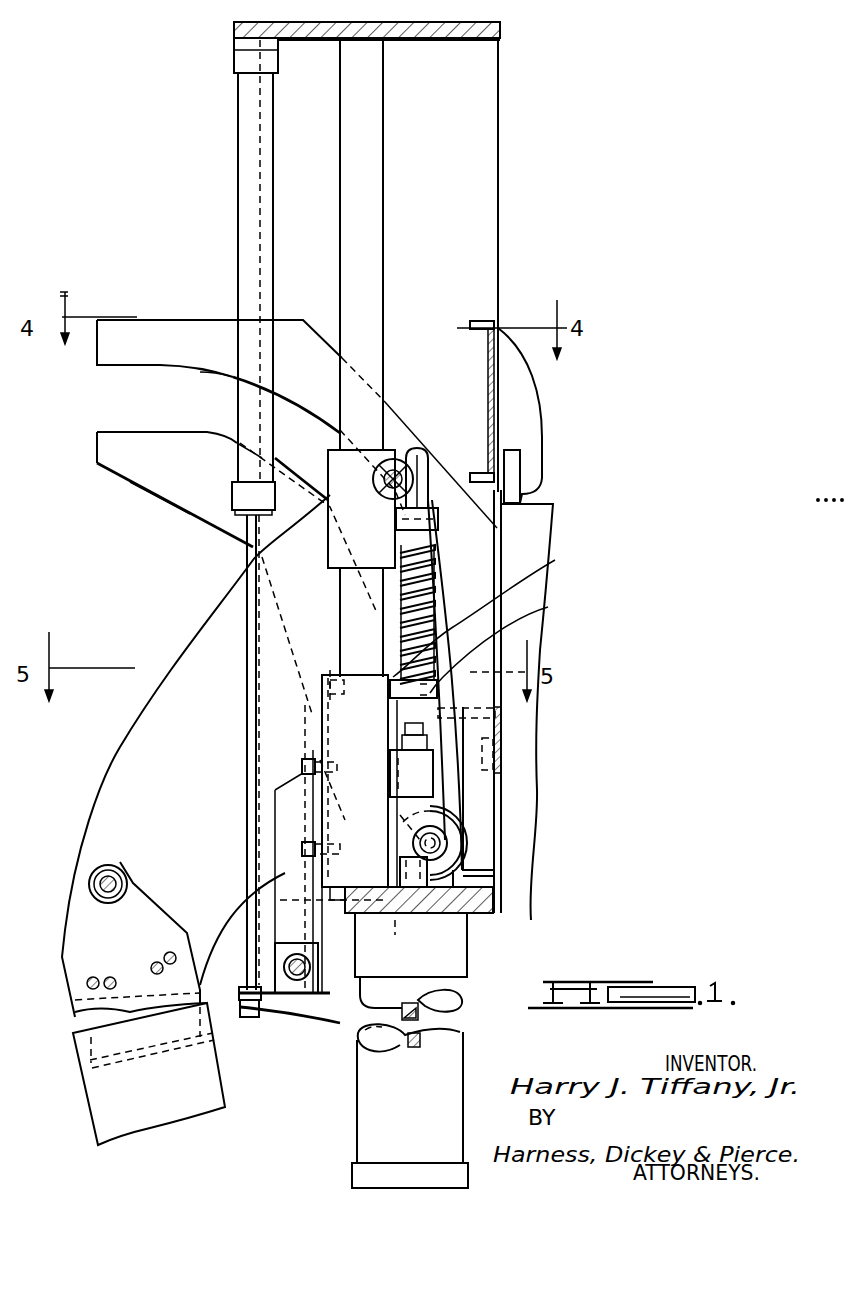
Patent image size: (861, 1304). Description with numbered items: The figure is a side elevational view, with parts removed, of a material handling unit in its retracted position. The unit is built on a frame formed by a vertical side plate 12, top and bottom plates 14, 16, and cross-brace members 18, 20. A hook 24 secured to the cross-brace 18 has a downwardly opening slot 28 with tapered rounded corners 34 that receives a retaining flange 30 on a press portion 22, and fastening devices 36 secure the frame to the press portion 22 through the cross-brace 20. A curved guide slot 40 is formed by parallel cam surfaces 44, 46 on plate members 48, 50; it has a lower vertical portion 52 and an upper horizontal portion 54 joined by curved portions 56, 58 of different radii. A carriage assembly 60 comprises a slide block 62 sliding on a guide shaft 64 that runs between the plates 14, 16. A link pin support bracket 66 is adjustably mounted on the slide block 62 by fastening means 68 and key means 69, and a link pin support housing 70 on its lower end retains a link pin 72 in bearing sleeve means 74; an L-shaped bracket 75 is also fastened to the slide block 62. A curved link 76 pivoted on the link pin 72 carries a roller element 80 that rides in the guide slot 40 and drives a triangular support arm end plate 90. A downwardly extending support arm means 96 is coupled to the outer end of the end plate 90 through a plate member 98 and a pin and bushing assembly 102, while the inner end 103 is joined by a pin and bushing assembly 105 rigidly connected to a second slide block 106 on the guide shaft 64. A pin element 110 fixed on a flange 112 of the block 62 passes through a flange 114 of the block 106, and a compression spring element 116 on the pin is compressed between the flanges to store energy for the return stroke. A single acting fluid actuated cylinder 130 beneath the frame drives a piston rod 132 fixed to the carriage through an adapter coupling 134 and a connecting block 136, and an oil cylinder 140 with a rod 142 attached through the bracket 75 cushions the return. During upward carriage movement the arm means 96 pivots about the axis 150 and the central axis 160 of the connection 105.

The vertical side plate 12 is at (487, 147).
The top plate 14 is at (468, 43).
The bottom plate 16 is at (487, 898).
The cross-brace member 18 is at (488, 378).
The cross-brace member 20 is at (505, 740).
The press portion 22 is at (548, 607).
The hook 24 is at (525, 414).
The downwardly opening slot 28 is at (522, 474).
The retaining flange 30 is at (516, 458).
The tapered rounded corner 34 is at (545, 507).
The fastening device 36 is at (508, 771).
The guide slot 40 is at (210, 405).
The cam surface 44 is at (228, 364).
The cam surface 46 is at (222, 447).
The plate member 48 is at (215, 518).
The plate member 50 is at (140, 328).
The lower substantially vertically extending portion 52 is at (477, 867).
The upper substantially horizontally extending portion 54 is at (140, 428).
The curved portion 56 is at (555, 560).
The curved portion 58 is at (318, 385).
The carriage assembly 60 is at (290, 761).
The slide block 62 is at (347, 705).
The guide shaft 64 is at (373, 193).
The link pin support bracket 66 is at (313, 793).
The fastening means 68 is at (300, 850).
The key means 69 is at (314, 672).
The link pin support housing 70 is at (275, 967).
The link pin 72 is at (296, 978).
The bearing sleeve means 74 is at (303, 1010).
The L-shaped bracket 75 is at (330, 996).
The curved link 76 is at (362, 930).
The roller element 80 is at (452, 908).
The support arm end plate 90 is at (135, 757).
The support arm means 96 is at (100, 1100).
The plate member 98 is at (80, 966).
The pin and bushing assembly 102 is at (123, 857).
The inner end of support arm end plate 103 is at (404, 448).
The pin and bushing assembly 105 is at (406, 450).
The slide block 106 is at (330, 468).
The pin element 110 is at (422, 450).
The flange 112 is at (462, 642).
The flange 114 is at (438, 518).
The compression spring element 116 is at (437, 593).
The fluid actuated cylinder 130 is at (438, 1080).
The piston rod 132 is at (460, 1028).
The adapter coupling 134 is at (412, 828).
The connecting block 136 is at (427, 783).
The oil cylinder 140 is at (245, 147).
The rod 142 is at (248, 620).
The axis 150 is at (447, 845).
The central axis 160 is at (385, 497).